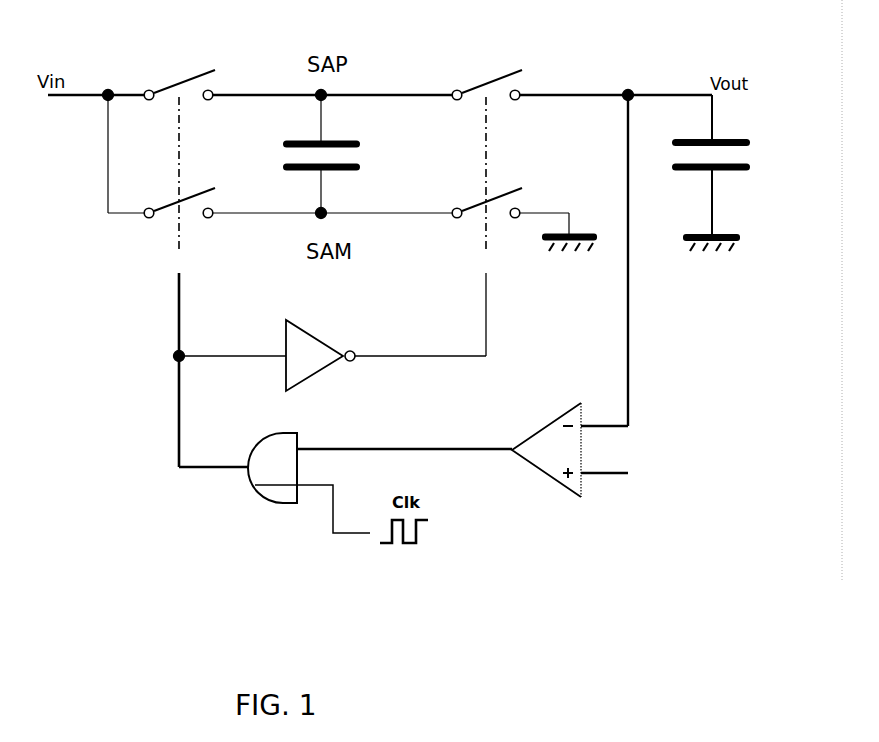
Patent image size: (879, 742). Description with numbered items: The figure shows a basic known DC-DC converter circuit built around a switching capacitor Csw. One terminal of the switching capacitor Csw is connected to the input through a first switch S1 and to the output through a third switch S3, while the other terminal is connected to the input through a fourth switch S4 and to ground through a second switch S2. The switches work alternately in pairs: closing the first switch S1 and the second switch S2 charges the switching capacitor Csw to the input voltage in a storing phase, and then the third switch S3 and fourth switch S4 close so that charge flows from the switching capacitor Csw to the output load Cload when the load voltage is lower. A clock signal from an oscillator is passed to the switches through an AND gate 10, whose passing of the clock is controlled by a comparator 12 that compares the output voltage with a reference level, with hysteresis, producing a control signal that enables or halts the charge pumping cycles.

The AND gate 10 is at (253, 480).
The comparator 12 is at (543, 473).
The first switch S1 is at (172, 81).
The second switch S2 is at (479, 199).
The third switch S3 is at (479, 81).
The fourth switch S4 is at (172, 199).
The switching capacitor Csw is at (347, 154).
The output load Cload is at (743, 165).